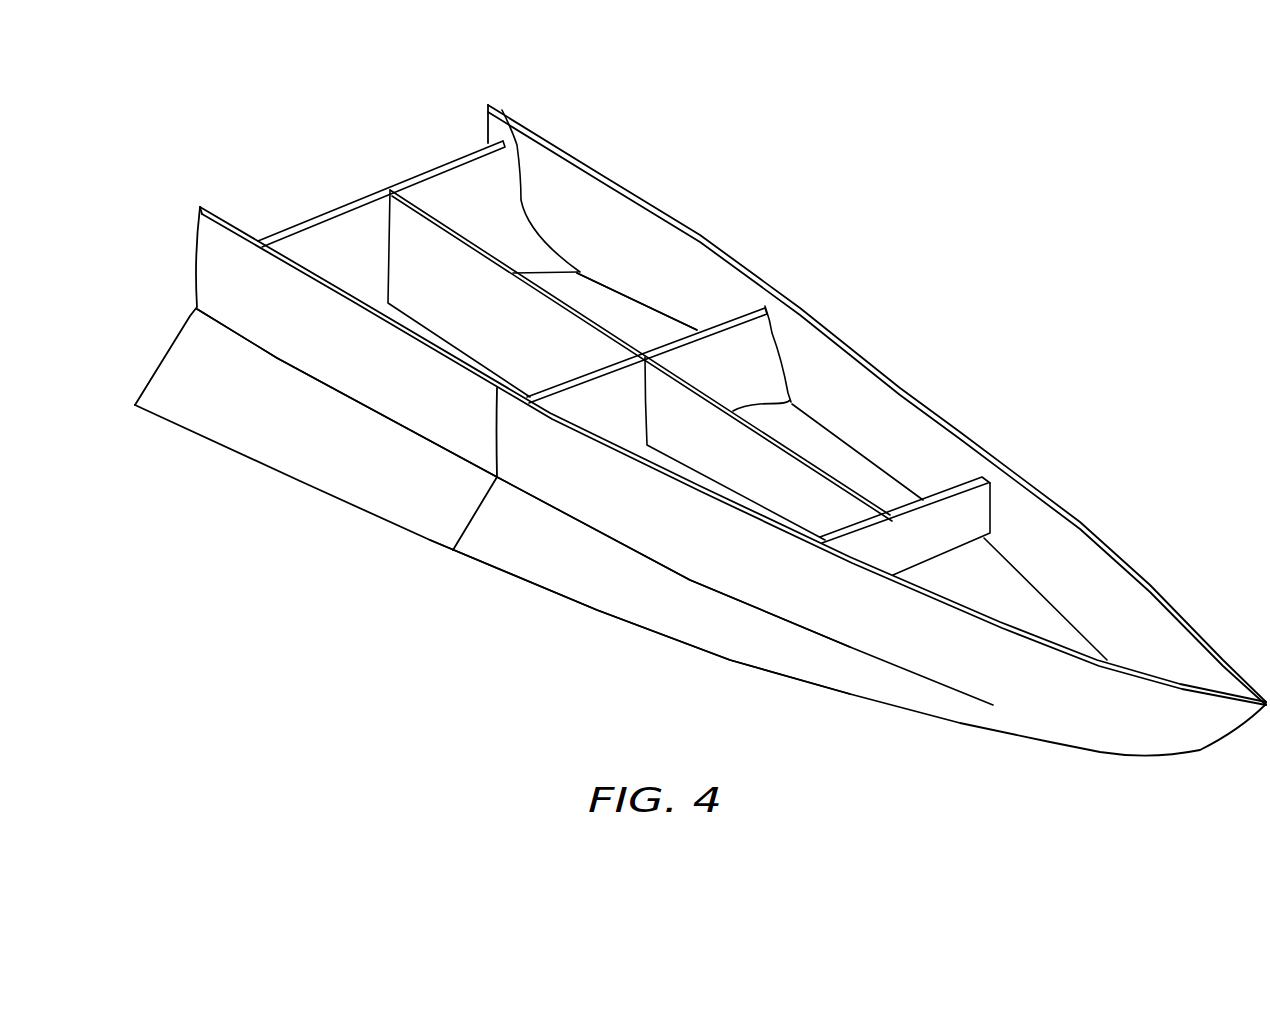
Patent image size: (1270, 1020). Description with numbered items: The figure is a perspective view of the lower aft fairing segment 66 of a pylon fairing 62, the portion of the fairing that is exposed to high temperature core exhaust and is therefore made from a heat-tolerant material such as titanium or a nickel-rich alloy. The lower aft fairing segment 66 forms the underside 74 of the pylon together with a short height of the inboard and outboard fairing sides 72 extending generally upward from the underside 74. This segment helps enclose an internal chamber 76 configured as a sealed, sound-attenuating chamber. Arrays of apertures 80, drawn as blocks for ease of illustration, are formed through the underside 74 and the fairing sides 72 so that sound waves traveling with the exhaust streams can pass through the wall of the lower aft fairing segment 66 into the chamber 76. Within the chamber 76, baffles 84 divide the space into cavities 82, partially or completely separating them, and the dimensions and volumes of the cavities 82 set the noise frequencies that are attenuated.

The pylon fairing 62 is at (700, 430).
The lower aft fairing segment 66 is at (982, 213).
The fairing sides 72 is at (610, 563).
The underside 74 is at (740, 660).
The internal chamber 76 is at (501, 103).
The apertures 80 is at (643, 263).
The cavities 82 is at (364, 222).
The baffles 84 is at (420, 222).